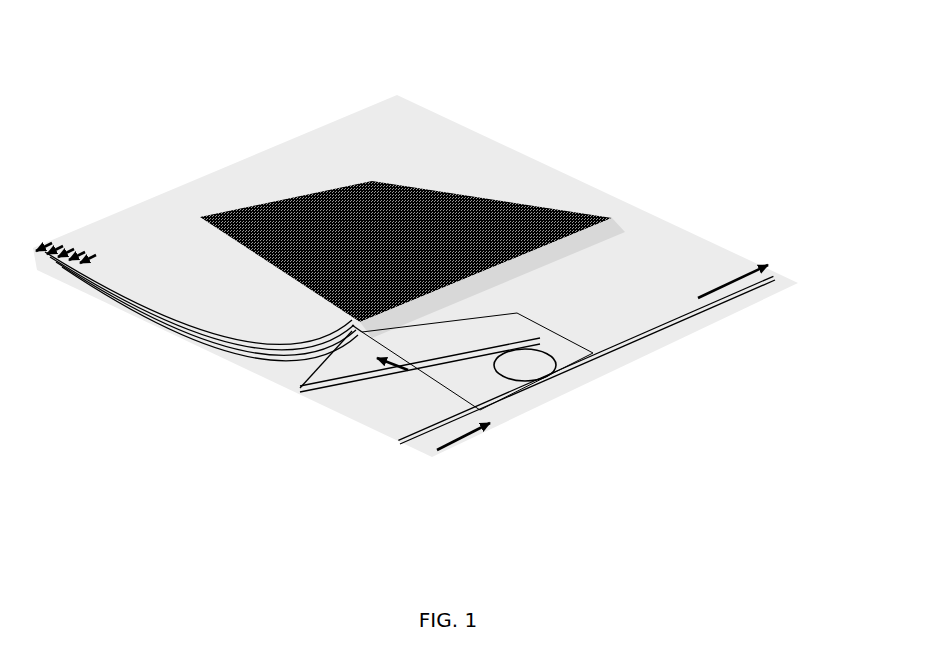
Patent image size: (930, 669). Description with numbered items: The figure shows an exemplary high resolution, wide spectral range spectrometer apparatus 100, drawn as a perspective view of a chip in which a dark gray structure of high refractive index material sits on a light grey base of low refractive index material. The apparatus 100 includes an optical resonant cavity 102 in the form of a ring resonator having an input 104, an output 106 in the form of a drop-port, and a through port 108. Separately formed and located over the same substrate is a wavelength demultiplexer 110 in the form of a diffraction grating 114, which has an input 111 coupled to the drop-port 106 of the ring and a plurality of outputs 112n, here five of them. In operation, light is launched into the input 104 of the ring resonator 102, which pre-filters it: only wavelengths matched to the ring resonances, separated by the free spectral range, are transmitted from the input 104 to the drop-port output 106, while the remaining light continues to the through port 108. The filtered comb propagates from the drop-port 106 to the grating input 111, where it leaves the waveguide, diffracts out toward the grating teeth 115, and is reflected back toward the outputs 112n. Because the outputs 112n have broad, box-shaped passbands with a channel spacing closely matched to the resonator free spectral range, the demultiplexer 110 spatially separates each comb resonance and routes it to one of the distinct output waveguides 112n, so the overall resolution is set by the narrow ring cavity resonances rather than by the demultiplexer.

The spectrometer apparatus 100 is at (598, 110).
The optical resonant cavity 102 is at (601, 376).
The input 104 is at (475, 463).
The output 106 is at (358, 393).
The through port 108 is at (617, 335).
The wavelength demultiplexer 110 is at (177, 338).
The input 111 is at (352, 332).
The outputs 112n is at (72, 212).
The diffraction grating 114 is at (445, 195).
The grating teeth 115 is at (495, 192).